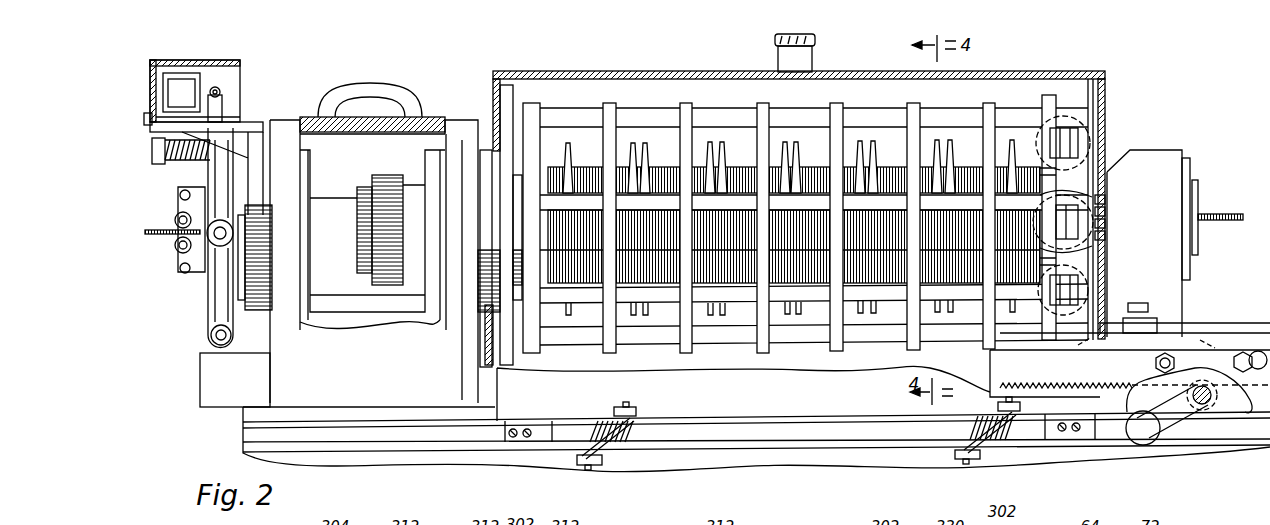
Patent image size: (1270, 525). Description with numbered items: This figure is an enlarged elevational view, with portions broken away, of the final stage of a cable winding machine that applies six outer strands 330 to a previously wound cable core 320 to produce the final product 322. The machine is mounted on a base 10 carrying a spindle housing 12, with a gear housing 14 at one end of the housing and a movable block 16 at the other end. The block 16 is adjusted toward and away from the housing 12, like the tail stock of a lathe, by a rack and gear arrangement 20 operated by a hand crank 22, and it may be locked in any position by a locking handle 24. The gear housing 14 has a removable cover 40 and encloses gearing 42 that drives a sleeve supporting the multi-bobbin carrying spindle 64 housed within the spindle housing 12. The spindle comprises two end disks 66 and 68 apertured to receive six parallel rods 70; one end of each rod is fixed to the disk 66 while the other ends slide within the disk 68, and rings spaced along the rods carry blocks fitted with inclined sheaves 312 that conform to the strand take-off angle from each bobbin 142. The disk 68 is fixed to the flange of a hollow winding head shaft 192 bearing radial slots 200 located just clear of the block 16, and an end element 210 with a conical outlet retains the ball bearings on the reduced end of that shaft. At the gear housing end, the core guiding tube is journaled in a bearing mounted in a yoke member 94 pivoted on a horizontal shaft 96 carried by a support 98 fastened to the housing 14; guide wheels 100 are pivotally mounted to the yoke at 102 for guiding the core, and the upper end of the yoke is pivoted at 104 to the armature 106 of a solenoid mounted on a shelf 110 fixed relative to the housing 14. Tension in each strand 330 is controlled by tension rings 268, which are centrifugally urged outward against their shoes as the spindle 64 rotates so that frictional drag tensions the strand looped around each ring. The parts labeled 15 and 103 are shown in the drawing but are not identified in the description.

The base 10 is at (258, 440).
The spindle housing 12 is at (1060, 72).
The gear housing 14 is at (459, 132).
The pipe 15 is at (815, 62).
The movable block 16 is at (1150, 155).
The rack and gear arrangement 20 is at (1215, 412).
The hand crank 22 is at (1150, 440).
The locking handle 24 is at (1198, 332).
The removable cover 40 is at (283, 126).
The gearing 42 is at (385, 190).
The multi-bobbin carrying spindle 64 is at (617, 93).
The end disk 66 is at (531, 356).
The end disk 68 is at (1050, 104).
The rods 70 is at (930, 108).
The yoke member 94 is at (220, 288).
The horizontal shaft 96 is at (211, 343).
The support 98 is at (212, 372).
The guide wheels 100 is at (176, 220).
The pivot 102 is at (180, 195).
The switch box 103 is at (168, 86).
The pivot 104 is at (224, 110).
The armature 106 is at (220, 90).
The shelf 110 is at (240, 126).
The bobbin 142 is at (785, 142).
The hollow winding head shaft 192 is at (1107, 212).
The radial slots 200 is at (1107, 225).
The end element 210 is at (1198, 197).
The tension rings 268 is at (1080, 147).
The sheave 312 is at (616, 128).
The cable core 320 is at (152, 236).
The final product 322 is at (1232, 215).
The strands 330 is at (590, 194).